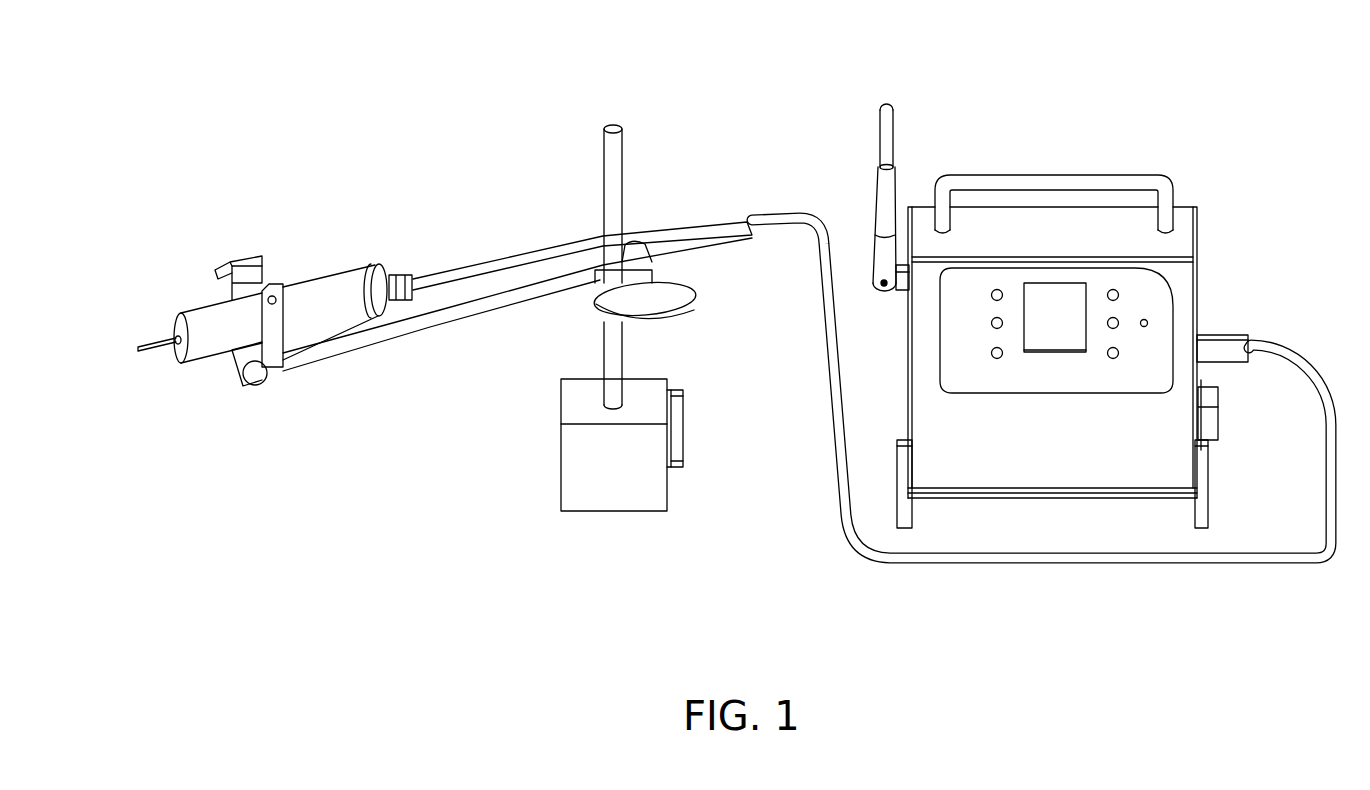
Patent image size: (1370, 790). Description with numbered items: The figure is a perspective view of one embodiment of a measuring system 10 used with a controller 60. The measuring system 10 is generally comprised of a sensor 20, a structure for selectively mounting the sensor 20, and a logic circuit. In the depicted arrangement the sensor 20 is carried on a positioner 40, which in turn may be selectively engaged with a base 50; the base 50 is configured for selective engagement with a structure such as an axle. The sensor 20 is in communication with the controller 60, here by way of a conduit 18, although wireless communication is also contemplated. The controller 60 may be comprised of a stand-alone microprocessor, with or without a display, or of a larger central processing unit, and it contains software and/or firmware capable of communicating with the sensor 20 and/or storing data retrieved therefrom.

The measuring system 10 is at (986, 78).
The conduit 18 is at (1216, 563).
The sensor 20 is at (288, 216).
The positioner 40 is at (485, 450).
The base 50 is at (722, 480).
The controller 60 is at (1181, 286).